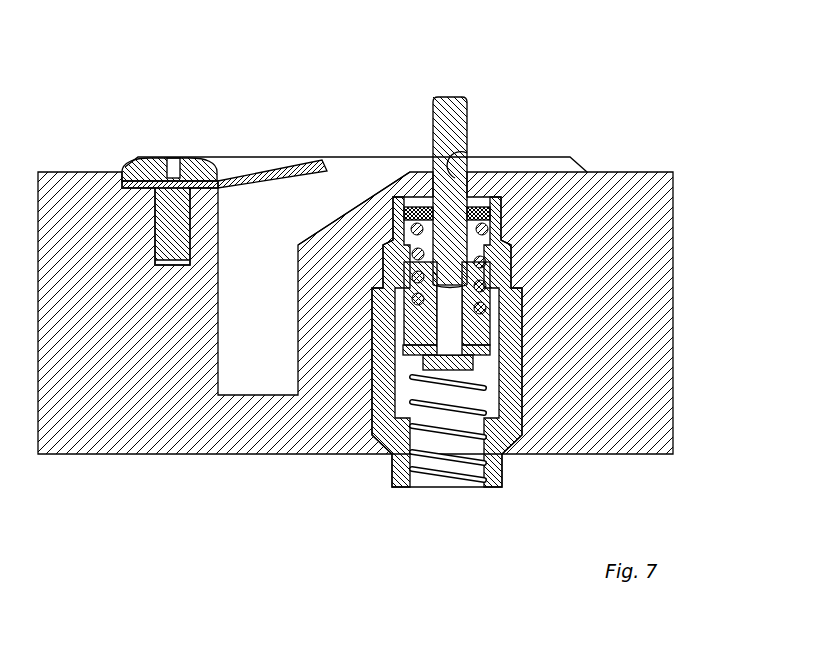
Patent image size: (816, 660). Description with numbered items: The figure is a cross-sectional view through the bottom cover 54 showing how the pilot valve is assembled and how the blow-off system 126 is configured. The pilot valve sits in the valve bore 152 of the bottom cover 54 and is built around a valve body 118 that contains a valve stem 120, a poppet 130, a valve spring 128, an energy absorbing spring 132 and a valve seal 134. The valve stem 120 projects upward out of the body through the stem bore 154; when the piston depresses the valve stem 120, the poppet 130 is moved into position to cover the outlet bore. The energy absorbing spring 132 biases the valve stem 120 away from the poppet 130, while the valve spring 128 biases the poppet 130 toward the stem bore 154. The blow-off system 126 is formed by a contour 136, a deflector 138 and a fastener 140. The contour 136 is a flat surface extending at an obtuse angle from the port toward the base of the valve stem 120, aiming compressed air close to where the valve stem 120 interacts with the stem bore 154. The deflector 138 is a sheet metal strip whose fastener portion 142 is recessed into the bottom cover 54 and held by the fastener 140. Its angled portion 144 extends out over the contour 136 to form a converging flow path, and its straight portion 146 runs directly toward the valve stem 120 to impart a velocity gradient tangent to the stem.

The bottom cover 54 is at (636, 410).
The valve body 118 is at (508, 382).
The valve stem 120 is at (448, 114).
The blow-off system 126 is at (313, 152).
The valve spring 128 is at (470, 458).
The poppet 130 is at (427, 362).
The energy absorbing spring 132 is at (500, 270).
The valve seal 134 is at (500, 228).
The contour 136 is at (352, 208).
The deflector 138 is at (273, 162).
The fastener 140 is at (163, 247).
The fastener portion 142 is at (148, 192).
The angled portion 144 is at (286, 165).
The straight portion 146 is at (317, 158).
The valve bore 152 is at (517, 452).
The stem bore 154 is at (467, 153).